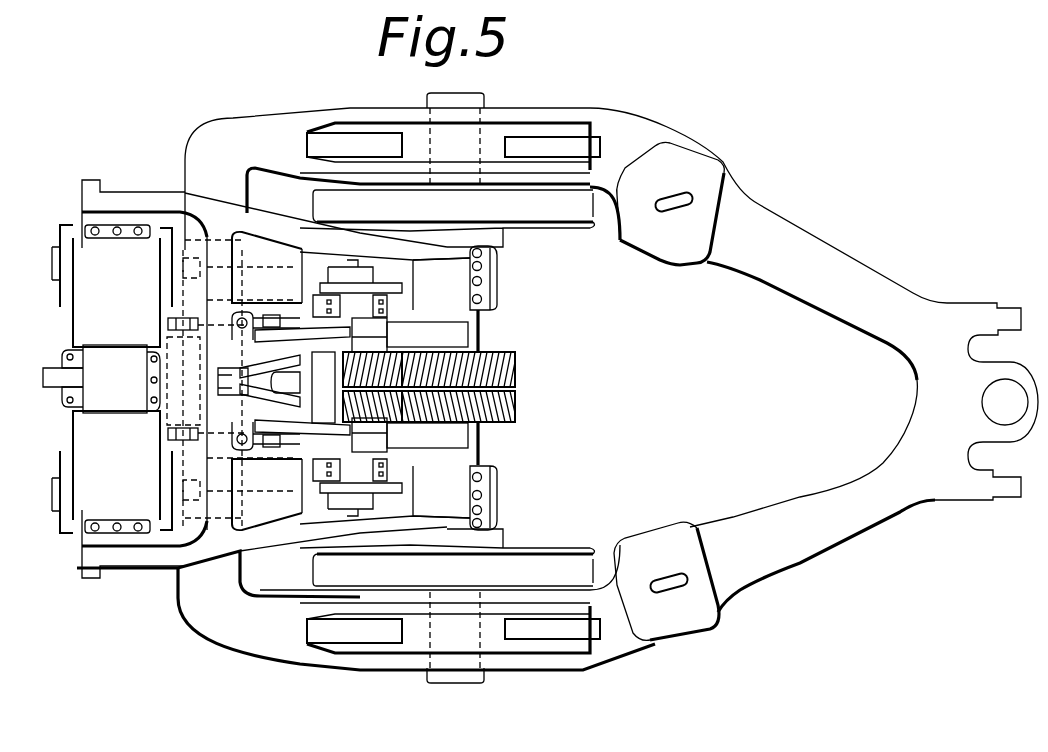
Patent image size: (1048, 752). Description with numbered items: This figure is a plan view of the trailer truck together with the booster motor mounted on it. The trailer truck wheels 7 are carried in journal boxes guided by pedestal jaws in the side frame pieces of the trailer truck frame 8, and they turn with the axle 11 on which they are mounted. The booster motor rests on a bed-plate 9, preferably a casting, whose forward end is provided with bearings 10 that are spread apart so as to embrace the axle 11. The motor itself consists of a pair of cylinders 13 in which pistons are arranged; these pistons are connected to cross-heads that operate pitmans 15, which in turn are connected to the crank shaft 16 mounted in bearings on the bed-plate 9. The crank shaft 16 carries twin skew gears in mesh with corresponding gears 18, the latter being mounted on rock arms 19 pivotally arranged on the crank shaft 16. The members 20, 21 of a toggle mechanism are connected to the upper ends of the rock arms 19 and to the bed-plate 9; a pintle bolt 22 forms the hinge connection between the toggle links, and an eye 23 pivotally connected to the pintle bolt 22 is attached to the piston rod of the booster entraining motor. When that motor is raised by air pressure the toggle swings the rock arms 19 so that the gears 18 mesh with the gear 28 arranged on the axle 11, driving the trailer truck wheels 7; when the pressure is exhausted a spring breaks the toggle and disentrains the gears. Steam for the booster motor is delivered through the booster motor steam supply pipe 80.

The trailer truck wheels 7 is at (527, 210).
The trailer truck frame 8 is at (770, 267).
The bed-plate 9 is at (153, 562).
The bearings 10 is at (467, 277).
The axle 11 is at (470, 333).
The cylinders 13 is at (160, 303).
The pitmans 15 is at (309, 250).
The crank shaft 16 is at (360, 287).
The gears 18 is at (345, 398).
The rock arms 19 is at (387, 346).
The toggle member 20 is at (295, 381).
The toggle member 21 is at (248, 381).
The pintle bolt 22 is at (270, 340).
The eye 23 is at (286, 381).
The gear 28 is at (515, 402).
The booster motor steam supply pipe 80 is at (43, 378).